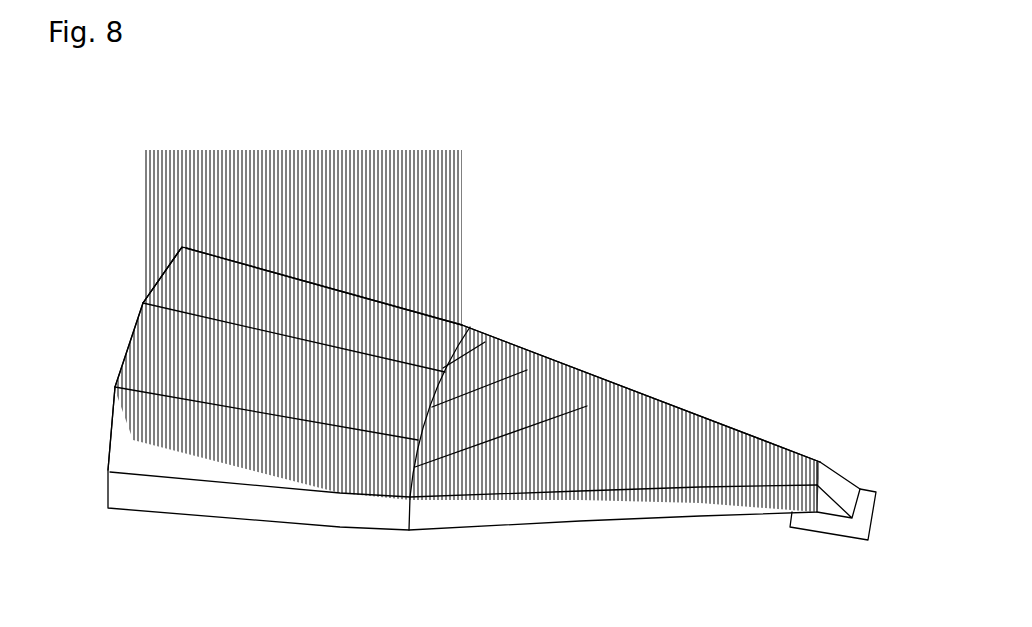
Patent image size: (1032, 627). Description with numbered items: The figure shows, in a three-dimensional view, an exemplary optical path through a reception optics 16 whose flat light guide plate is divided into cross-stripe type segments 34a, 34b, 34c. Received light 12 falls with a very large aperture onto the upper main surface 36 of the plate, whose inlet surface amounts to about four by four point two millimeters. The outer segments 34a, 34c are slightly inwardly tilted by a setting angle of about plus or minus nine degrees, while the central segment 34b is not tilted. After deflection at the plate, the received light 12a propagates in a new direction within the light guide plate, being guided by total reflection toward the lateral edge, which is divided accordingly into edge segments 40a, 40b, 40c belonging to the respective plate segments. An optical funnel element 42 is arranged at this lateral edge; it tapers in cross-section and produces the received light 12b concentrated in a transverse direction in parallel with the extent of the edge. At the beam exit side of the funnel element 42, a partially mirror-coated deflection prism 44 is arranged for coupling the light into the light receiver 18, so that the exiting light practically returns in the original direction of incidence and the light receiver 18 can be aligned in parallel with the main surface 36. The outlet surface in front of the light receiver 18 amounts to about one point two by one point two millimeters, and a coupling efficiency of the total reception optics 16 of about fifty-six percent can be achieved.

The received light 12 is at (356, 237).
The received light after deflection 12a is at (421, 461).
The concentrated received light 12b is at (463, 531).
The reception optics 16 is at (464, 388).
The light receiver 18 is at (863, 486).
The first segment of light guide plate 34a is at (122, 272).
The central segment of light guide plate 34b is at (241, 345).
The third segment of light guide plate 34c is at (216, 428).
The main surface 36 is at (343, 295).
The first lateral edge segment 40a is at (502, 334).
The second lateral edge segment 40b is at (524, 366).
The third lateral edge segment 40c is at (543, 413).
The optical funnel element 42 is at (641, 393).
The deflection prism 44 is at (838, 461).